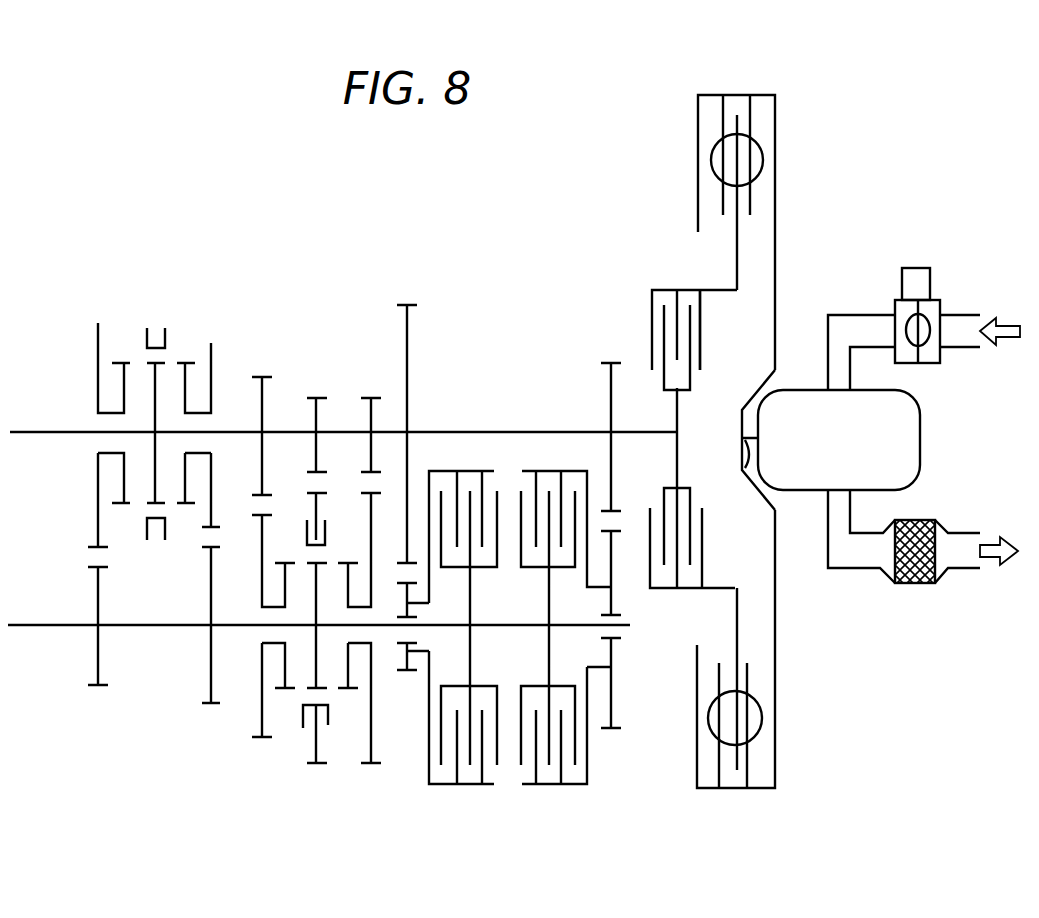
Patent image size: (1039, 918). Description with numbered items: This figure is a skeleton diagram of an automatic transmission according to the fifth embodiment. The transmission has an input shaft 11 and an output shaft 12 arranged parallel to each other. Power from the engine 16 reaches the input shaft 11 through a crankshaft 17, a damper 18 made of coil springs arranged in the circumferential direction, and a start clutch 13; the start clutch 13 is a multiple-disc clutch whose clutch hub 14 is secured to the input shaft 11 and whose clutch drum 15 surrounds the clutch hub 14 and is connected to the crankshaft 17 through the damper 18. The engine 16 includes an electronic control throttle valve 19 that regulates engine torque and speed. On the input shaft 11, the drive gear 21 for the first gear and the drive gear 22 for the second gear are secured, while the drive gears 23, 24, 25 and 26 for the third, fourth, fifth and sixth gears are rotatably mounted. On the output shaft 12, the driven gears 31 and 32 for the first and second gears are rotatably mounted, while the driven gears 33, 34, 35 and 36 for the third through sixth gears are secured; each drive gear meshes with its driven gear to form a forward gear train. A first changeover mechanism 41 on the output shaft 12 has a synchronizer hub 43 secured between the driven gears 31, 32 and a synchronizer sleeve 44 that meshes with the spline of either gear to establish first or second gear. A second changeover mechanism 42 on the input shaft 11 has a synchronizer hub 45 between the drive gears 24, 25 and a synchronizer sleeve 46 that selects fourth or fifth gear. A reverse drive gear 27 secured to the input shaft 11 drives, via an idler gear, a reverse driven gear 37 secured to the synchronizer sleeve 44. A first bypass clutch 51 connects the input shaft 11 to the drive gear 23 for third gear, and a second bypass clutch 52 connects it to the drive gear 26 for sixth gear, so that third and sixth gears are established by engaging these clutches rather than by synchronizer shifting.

The input shaft 11 is at (648, 434).
The output shaft 12 is at (30, 632).
The start clutch 13 is at (660, 280).
The clutch hub 14 is at (680, 462).
The clutch drum 15 is at (722, 293).
The engine 16 is at (907, 440).
The crankshaft 17 is at (746, 470).
The damper 18 is at (765, 160).
The electronic control throttle valve 19 is at (946, 279).
The drive gear for the first gear 21 is at (374, 397).
The drive gear for the second gear 22 is at (282, 370).
The drive gear for the third gear 23 is at (613, 365).
The drive gear for the fourth gear 24 is at (218, 342).
The drive gear for the fifth gear 25 is at (113, 320).
The drive gear for the sixth gear 26 is at (408, 325).
The reverse drive gear 27 is at (333, 392).
The driven gear for the first gear 31 is at (369, 766).
The driven gear for the second gear 32 is at (260, 740).
The driven gear for the third gear 33 is at (611, 732).
The driven gear for the fourth gear 34 is at (210, 706).
The driven gear for the fifth gear 35 is at (97, 688).
The driven gear for the sixth gear 36 is at (406, 673).
The reverse driven gear 37 is at (313, 765).
The first changeover mechanism 41 is at (302, 736).
The second changeover mechanism 42 is at (155, 536).
The synchronizer hub 43 is at (316, 670).
The synchronizer sleeve 44 is at (303, 715).
The synchronizer hub 45 is at (157, 470).
The synchronizer sleeve 46 is at (155, 330).
The first bypass clutch 51 is at (557, 795).
The second bypass clutch 52 is at (455, 795).